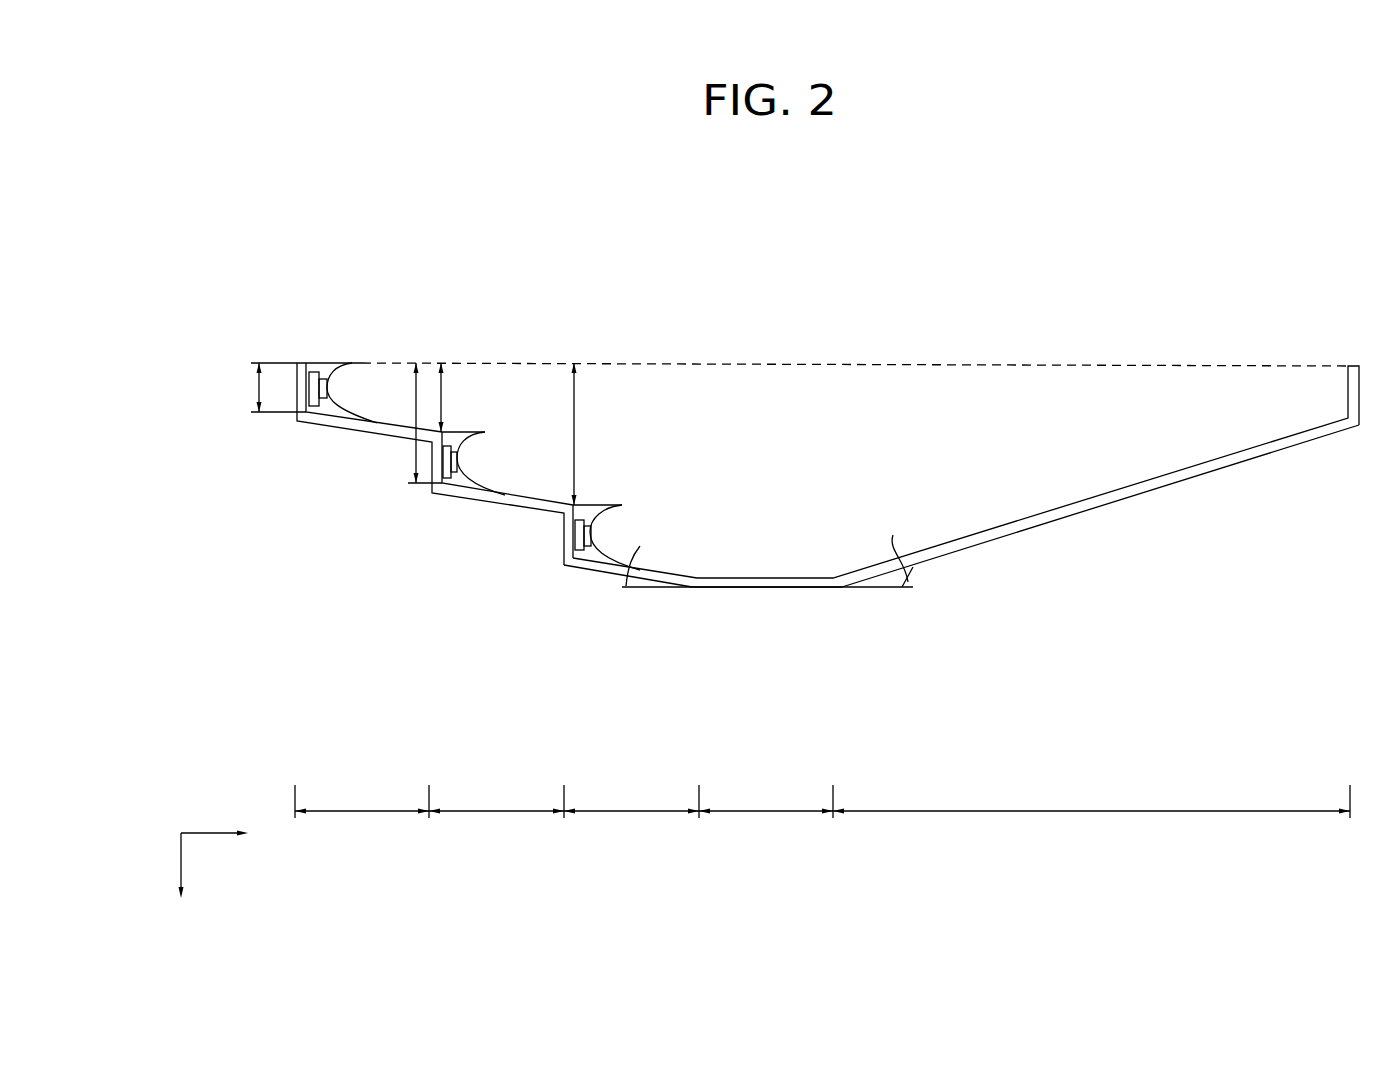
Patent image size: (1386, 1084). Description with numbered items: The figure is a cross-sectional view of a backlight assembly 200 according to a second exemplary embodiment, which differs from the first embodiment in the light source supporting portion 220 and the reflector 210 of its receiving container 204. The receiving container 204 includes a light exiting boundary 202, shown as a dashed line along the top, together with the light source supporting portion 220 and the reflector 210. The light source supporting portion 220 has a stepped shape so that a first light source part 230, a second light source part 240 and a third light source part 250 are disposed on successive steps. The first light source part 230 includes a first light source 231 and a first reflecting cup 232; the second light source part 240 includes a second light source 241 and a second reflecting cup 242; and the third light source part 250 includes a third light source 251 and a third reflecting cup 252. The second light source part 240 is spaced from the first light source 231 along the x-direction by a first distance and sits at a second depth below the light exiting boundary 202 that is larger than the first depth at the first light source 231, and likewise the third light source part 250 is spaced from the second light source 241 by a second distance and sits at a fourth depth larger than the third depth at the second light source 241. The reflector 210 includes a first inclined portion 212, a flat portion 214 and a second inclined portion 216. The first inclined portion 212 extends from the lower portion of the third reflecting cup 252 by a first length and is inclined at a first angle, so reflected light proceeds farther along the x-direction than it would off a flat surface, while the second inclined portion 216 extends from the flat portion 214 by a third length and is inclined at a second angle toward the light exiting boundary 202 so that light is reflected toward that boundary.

The backlight assembly 200 is at (803, 266).
The light exiting boundary 202 is at (1186, 358).
The receiving container 204 is at (797, 706).
The reflector 210 is at (958, 672).
The first inclined portion 212 is at (603, 584).
The flat portion 214 is at (761, 597).
The second inclined portion 216 is at (937, 568).
The light source supporting portion 220 is at (340, 424).
The first light source part 230 is at (382, 294).
The first light source 231 is at (310, 372).
The first reflecting cup 232 is at (327, 367).
The second light source part 240 is at (503, 562).
The second light source 241 is at (443, 487).
The second reflecting cup 242 is at (455, 482).
The third light source part 250 is at (582, 635).
The third light source 251 is at (573, 543).
The third reflecting cup 252 is at (592, 555).